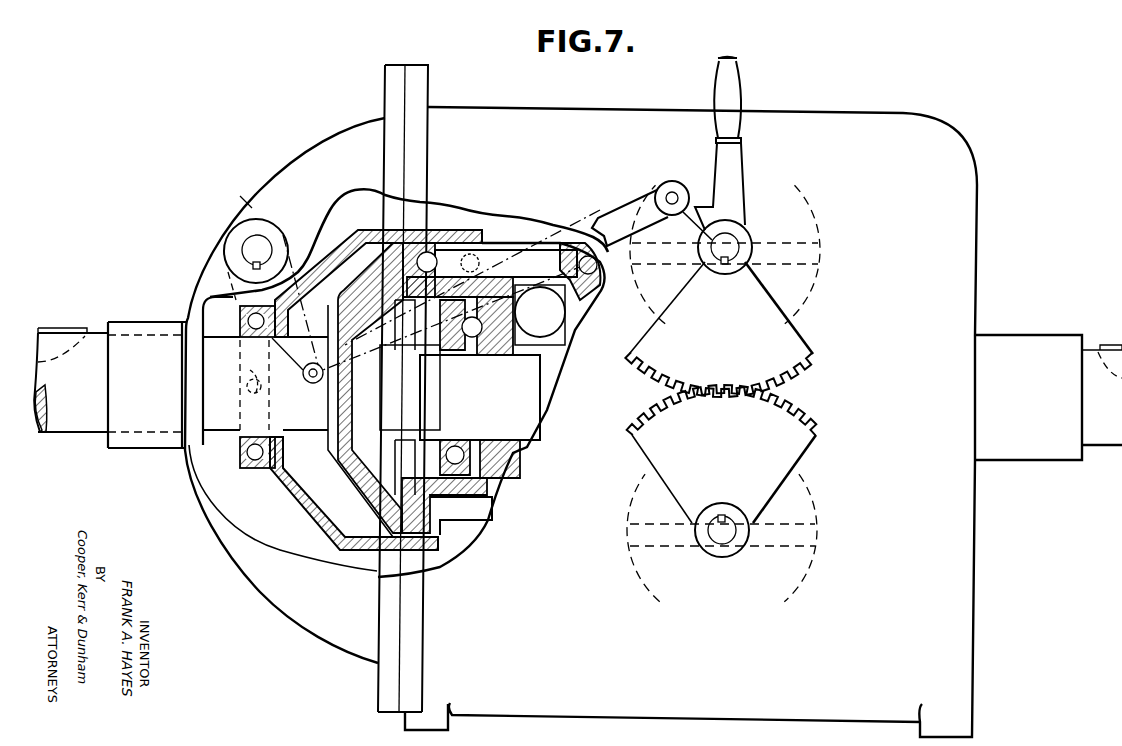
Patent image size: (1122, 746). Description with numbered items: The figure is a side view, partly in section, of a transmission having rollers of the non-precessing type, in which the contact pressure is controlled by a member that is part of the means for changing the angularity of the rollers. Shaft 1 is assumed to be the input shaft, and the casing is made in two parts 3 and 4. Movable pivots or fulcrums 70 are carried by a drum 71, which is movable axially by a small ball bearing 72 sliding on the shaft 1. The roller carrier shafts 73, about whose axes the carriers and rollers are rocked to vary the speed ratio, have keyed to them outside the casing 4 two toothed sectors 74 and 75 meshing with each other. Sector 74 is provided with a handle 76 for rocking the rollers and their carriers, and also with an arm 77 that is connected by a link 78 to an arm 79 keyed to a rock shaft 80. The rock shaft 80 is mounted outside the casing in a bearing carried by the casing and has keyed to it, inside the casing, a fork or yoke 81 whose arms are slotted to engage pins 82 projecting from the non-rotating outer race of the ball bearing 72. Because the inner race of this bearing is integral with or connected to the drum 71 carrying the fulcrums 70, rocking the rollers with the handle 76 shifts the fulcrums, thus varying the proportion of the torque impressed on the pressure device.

The input shaft 1 is at (97, 428).
The casing part 3 is at (256, 214).
The casing part 4 is at (622, 116).
The movable fulcrums 70 is at (483, 251).
The drum 71 is at (379, 236).
The ball bearing 72 is at (249, 470).
The roller carrier shafts 73 is at (733, 243).
The toothed sector 74 is at (812, 354).
The toothed sector 75 is at (792, 462).
The handle 76 is at (733, 98).
The arm 77 is at (703, 207).
The link 78 is at (609, 214).
The arm 79 is at (298, 250).
The rock shaft 80 is at (260, 246).
The fork or yoke 81 is at (240, 305).
The pins 82 is at (250, 388).